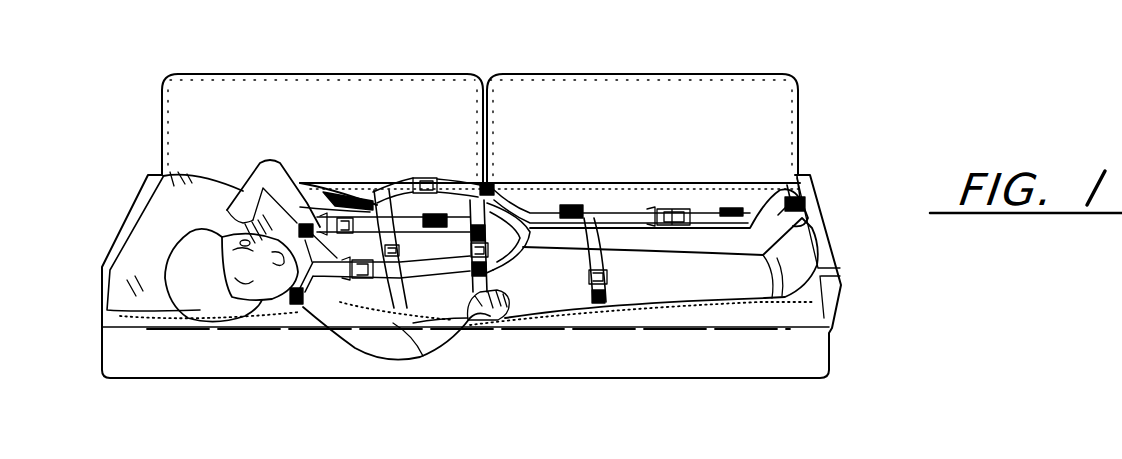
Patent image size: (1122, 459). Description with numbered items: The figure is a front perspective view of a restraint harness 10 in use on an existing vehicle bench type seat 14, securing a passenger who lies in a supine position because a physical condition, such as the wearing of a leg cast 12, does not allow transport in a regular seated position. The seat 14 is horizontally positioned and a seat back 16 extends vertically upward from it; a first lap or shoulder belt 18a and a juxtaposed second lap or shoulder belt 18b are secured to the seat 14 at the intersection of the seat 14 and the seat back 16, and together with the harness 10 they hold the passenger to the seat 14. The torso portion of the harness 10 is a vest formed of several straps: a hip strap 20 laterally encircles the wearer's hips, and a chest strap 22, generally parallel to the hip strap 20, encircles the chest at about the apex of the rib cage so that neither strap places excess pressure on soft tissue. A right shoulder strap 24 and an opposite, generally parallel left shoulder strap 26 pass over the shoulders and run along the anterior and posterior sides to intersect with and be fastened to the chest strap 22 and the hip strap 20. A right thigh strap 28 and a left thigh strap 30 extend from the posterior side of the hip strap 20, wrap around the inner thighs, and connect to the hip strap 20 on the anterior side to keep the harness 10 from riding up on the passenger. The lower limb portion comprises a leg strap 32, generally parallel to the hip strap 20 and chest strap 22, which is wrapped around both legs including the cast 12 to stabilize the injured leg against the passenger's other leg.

The restraint harness 10 is at (338, 290).
The leg cast 12 is at (797, 197).
The bench type seat 14 is at (720, 358).
The seat back 16 is at (782, 74).
The first lap or shoulder belt 18a is at (348, 183).
The second lap or shoulder belt 18b is at (515, 187).
The hip strap 20 is at (462, 300).
The chest strap 22 is at (398, 305).
The right shoulder strap 24 is at (300, 293).
The left shoulder strap 26 is at (300, 225).
The right thigh strap 28 is at (523, 246).
The left thigh strap 30 is at (525, 215).
The leg strap 32 is at (604, 306).